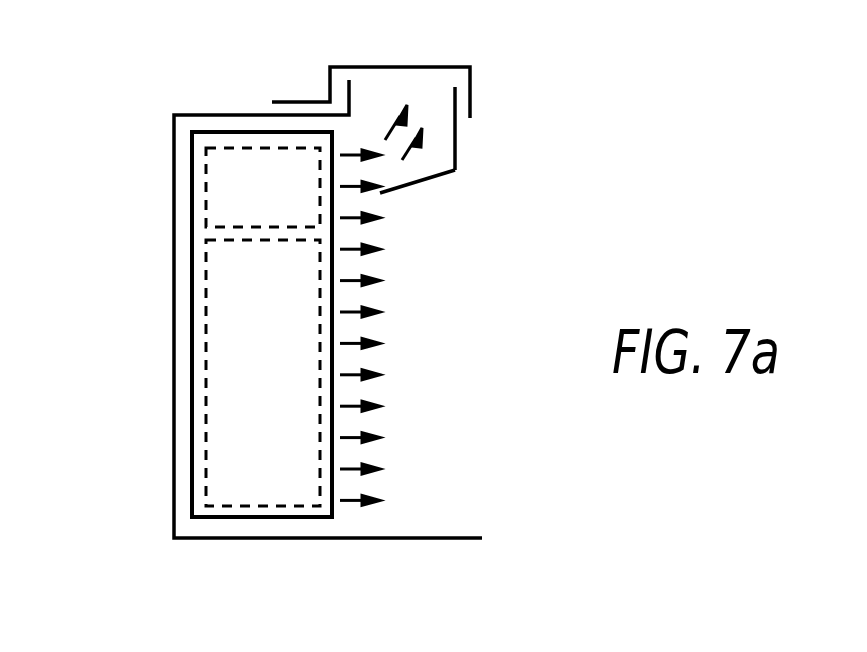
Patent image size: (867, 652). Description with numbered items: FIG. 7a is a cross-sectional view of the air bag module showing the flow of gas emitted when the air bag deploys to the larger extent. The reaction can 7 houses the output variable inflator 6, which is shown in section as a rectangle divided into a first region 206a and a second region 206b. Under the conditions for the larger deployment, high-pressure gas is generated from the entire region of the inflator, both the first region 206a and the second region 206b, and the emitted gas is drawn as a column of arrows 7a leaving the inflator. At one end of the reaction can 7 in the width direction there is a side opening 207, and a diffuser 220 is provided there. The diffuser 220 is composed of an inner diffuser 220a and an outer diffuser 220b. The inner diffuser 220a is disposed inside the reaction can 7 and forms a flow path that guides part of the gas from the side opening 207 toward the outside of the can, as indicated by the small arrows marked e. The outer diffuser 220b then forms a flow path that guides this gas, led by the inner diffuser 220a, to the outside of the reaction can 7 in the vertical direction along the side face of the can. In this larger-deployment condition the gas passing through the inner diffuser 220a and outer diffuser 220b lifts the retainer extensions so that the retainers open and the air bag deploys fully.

The output variable inflator 6 is at (192, 452).
The reaction can 7 is at (330, 540).
The air flow 7a is at (417, 381).
The first region 206a is at (215, 370).
The second region 206b is at (215, 187).
The side opening 207 is at (367, 113).
The diffuser 220 is at (470, 140).
The inner diffuser 220a is at (450, 175).
The outer diffuser 220b is at (428, 67).